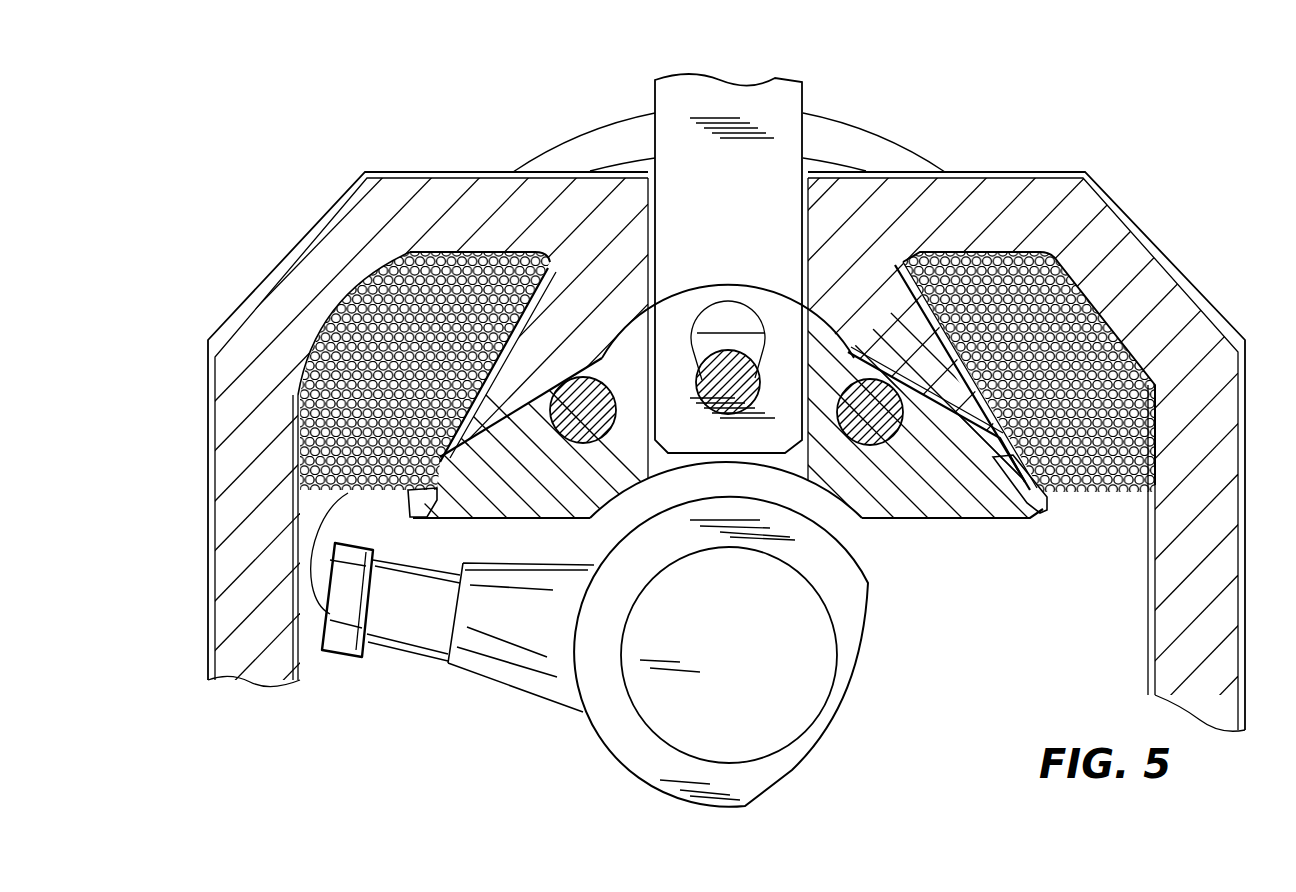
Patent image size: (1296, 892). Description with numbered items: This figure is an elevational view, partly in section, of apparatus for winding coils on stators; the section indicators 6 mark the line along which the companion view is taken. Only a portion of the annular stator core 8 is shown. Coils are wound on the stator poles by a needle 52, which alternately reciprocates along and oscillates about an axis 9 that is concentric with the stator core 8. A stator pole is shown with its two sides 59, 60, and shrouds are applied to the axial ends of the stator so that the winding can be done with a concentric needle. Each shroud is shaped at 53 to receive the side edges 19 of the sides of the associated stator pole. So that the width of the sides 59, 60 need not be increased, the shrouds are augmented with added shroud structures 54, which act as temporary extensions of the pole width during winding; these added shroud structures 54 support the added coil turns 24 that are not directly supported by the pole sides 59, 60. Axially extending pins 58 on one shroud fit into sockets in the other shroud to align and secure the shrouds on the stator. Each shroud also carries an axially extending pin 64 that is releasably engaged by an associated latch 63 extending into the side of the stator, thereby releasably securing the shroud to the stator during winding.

The section line 6- 6 is at (733, 8).
The stator core 8 is at (1183, 660).
The axis 9 is at (727, 652).
The side edges 19 is at (592, 519).
The added coil turns 24 is at (283, 450).
The needle 52 is at (812, 643).
The shaped portion of shroud 53 is at (459, 516).
The added shroud structures 54 is at (437, 505).
The axially extending pins 58 is at (728, 319).
The side of stator pole 59 is at (433, 413).
The side of stator pole 60 is at (880, 521).
The latch 63 is at (788, 96).
The axially extending pin 64 is at (748, 405).